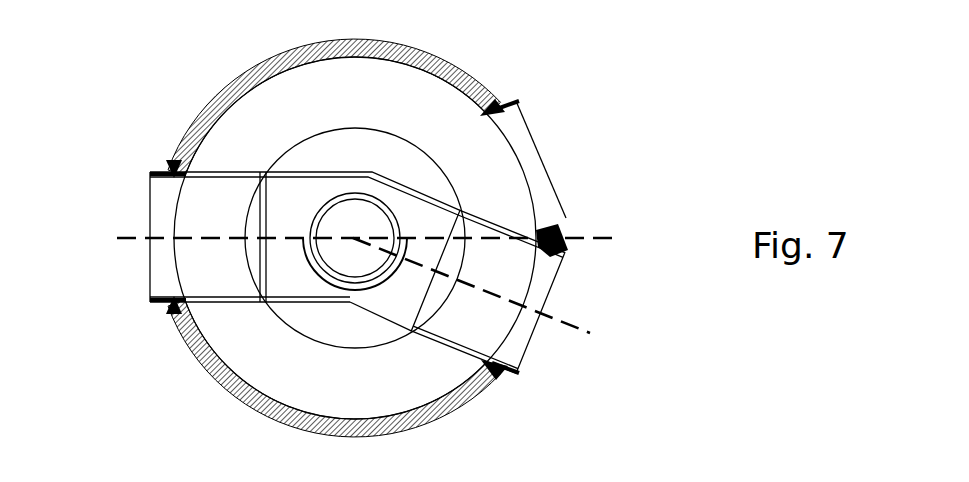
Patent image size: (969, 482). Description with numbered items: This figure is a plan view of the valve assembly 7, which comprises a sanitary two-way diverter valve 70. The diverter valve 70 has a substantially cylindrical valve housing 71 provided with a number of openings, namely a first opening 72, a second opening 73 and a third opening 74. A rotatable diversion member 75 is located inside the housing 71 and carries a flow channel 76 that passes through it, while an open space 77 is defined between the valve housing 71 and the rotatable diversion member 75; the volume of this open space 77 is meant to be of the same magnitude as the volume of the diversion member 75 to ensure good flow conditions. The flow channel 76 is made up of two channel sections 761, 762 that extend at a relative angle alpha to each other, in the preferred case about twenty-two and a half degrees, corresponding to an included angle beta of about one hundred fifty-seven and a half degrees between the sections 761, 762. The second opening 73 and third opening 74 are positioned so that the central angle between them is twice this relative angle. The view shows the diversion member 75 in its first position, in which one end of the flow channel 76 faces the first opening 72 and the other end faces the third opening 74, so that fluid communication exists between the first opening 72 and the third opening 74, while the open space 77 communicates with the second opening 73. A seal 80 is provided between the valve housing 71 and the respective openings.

The valve assembly 7 is at (672, 76).
The sanitary two-way diverter valve 70 is at (520, 55).
The valve housing 71 is at (255, 78).
The first opening 72 is at (157, 224).
The second opening 73 is at (548, 168).
The third opening 74 is at (532, 321).
The rotatable diversion member 75 is at (310, 308).
The flow channel 76 is at (345, 158).
The first channel section 761 is at (280, 232).
The second channel section 762 is at (400, 312).
The open space 77 is at (333, 378).
The seal 80 is at (554, 226).